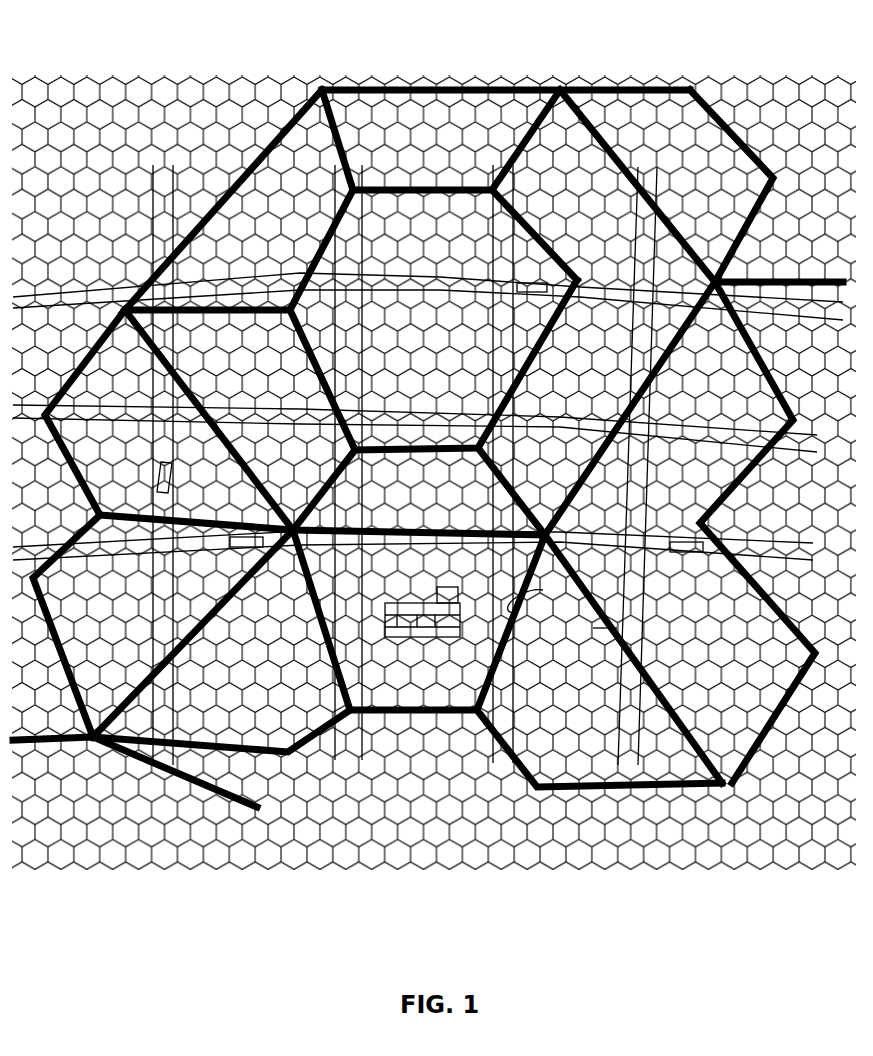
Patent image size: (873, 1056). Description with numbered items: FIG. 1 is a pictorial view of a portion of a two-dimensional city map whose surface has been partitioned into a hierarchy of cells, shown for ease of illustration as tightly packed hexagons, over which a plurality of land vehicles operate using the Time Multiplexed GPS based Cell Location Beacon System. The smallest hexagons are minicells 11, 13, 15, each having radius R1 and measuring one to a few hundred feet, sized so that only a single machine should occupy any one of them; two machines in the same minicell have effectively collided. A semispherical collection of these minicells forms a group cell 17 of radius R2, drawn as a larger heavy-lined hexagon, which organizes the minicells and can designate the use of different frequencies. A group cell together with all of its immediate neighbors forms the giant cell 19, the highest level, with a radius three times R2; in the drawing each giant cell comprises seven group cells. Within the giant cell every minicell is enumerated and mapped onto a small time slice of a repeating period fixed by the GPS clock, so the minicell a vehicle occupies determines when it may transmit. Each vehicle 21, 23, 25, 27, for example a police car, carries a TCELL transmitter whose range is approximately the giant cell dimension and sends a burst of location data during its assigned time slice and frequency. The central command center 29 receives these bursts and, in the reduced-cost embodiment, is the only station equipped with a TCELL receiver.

The minicell 11 is at (397, 278).
The minicell 13 is at (396, 538).
The minicell 15 is at (548, 532).
The group cell 17 is at (537, 230).
The giant cell 19 is at (480, 88).
The vehicle 21 is at (547, 273).
The vehicle 23 is at (157, 470).
The vehicle 25 is at (240, 522).
The vehicle 27 is at (703, 524).
The central command center 29 is at (430, 640).